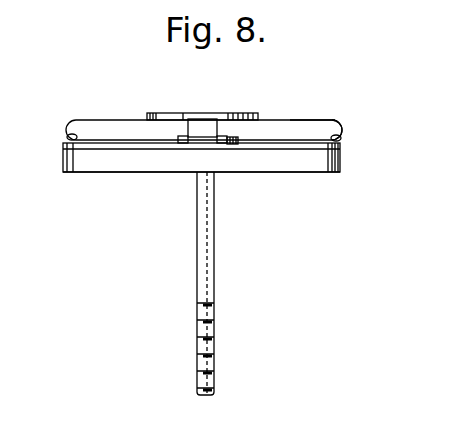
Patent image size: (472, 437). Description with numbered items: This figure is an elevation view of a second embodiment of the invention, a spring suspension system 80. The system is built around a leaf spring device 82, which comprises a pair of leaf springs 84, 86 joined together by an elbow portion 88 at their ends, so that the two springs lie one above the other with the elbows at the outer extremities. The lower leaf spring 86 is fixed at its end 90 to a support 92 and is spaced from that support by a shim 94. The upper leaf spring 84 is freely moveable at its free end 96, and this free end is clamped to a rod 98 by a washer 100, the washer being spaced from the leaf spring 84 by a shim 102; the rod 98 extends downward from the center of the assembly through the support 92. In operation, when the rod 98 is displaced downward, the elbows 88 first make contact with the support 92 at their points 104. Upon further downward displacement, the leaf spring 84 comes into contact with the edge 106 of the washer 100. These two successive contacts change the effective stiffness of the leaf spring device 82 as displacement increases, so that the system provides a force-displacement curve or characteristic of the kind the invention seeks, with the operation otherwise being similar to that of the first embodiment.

The spring suspension system 80 is at (335, 180).
The leaf spring device 82 is at (312, 119).
The leaf spring 84 is at (270, 120).
The leaf spring 86 is at (300, 147).
The elbow portion 88 is at (342, 130).
The end 90 is at (232, 144).
The support 92 is at (133, 163).
The shim 94 is at (189, 143).
The free end 96 is at (226, 120).
The rod 98 is at (214, 283).
The washer 100 is at (164, 112).
The shim 102 is at (184, 119).
The points 104 is at (70, 139).
The edge 106 is at (150, 116).